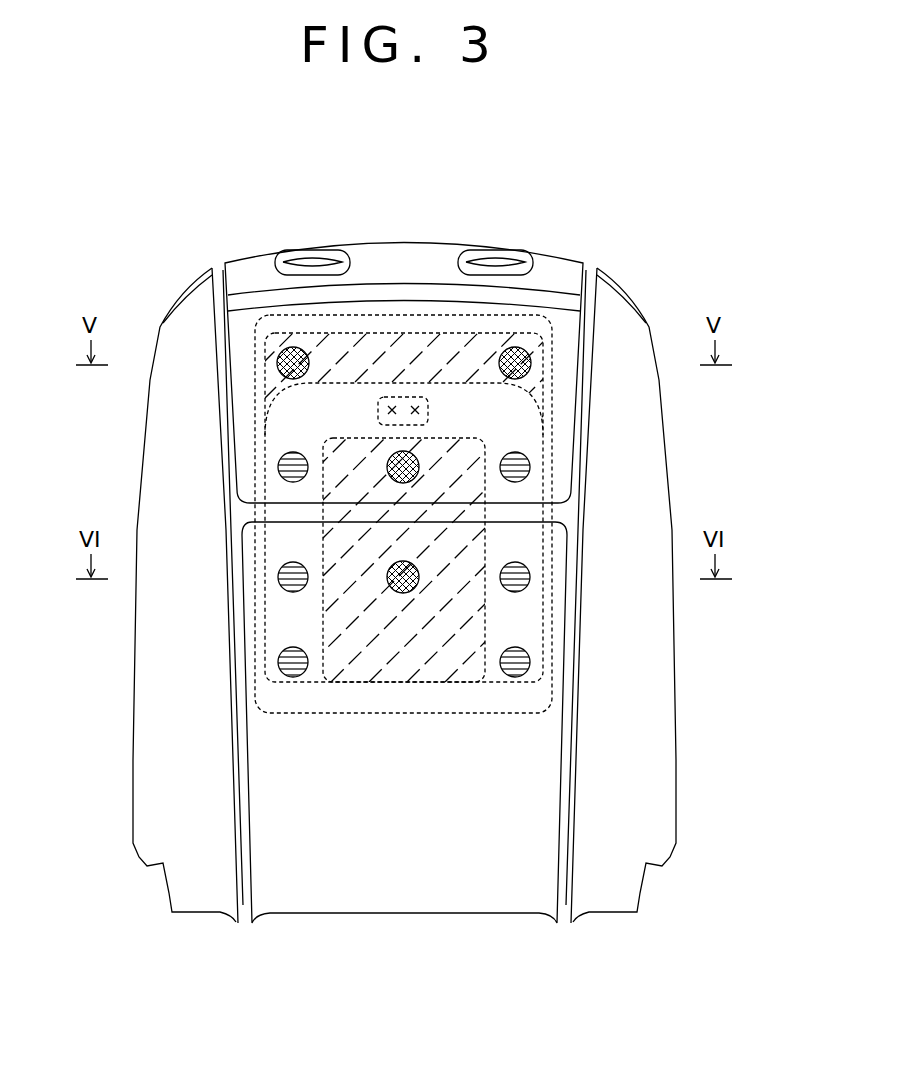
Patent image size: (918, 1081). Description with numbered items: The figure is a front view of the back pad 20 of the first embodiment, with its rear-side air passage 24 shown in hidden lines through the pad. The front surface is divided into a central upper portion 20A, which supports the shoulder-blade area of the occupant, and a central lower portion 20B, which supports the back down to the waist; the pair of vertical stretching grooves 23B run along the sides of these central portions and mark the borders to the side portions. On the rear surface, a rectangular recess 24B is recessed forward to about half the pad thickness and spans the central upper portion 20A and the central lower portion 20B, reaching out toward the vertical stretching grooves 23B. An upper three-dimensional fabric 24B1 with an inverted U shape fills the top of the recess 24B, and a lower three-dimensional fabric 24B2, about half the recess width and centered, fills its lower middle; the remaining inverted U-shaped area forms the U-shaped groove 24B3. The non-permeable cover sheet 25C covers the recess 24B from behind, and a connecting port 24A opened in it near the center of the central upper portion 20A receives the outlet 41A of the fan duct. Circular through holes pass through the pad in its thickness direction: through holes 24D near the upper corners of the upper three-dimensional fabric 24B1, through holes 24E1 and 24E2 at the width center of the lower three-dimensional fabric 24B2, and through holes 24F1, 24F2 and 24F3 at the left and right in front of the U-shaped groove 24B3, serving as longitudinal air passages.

The back pad 20 is at (155, 257).
The central upper portion 20A is at (283, 397).
The central lower portion 20B is at (435, 836).
The vertical stretching groove 23B is at (245, 800).
The air passage 24 is at (548, 391).
The connecting port 24A is at (415, 406).
The recess 24B is at (443, 338).
The upper three-dimensional fabric 24B1 is at (543, 348).
The lower three-dimensional fabric 24B2 is at (367, 673).
The U-shaped groove 24B3 is at (512, 618).
The through hole 24D is at (290, 348).
The through hole 24E1 is at (417, 473).
The through hole 24E2 is at (403, 593).
The through hole 24F1 is at (278, 466).
The through hole 24F2 is at (278, 582).
The through hole 24F3 is at (278, 667).
The cover sheet 25C is at (318, 712).
The outlet 41A is at (392, 406).